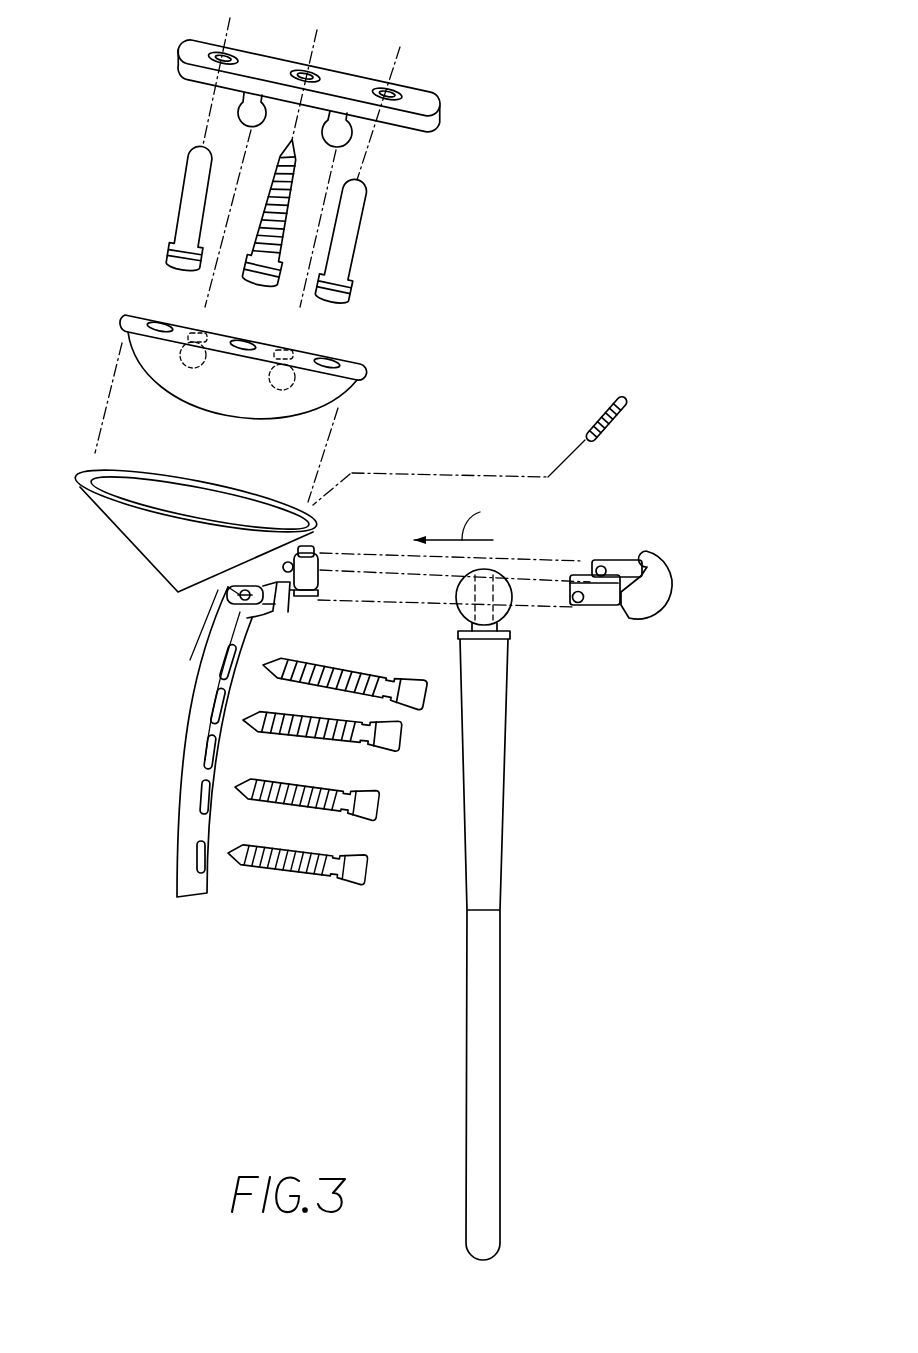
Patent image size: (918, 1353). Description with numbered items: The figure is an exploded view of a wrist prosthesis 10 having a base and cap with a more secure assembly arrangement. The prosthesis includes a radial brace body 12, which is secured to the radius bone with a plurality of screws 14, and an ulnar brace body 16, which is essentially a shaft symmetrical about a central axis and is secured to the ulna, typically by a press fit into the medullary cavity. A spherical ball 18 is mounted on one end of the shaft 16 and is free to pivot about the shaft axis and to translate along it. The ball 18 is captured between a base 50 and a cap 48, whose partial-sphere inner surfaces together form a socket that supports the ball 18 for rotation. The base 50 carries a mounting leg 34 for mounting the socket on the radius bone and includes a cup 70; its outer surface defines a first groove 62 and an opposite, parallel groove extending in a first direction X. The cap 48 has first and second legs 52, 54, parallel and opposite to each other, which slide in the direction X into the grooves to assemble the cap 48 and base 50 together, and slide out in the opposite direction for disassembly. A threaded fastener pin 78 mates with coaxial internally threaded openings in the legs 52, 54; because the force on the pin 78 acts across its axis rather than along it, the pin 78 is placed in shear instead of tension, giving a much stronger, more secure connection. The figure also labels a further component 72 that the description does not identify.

The wrist prosthesis 10 is at (473, 393).
The radial brace body 12 is at (257, 752).
The screws 14 is at (427, 705).
The ulnar brace body 16 is at (512, 830).
The spherical ball 18 is at (508, 618).
The mounting leg 34 is at (197, 712).
The cap 48 is at (688, 570).
The base 50 is at (318, 540).
The first leg 52 is at (597, 605).
The second leg 54 is at (610, 560).
The first groove 62 is at (224, 596).
The cup 70 is at (120, 543).
The fastening plate assembly 72 is at (160, 22).
The fastener pin 78 is at (614, 421).